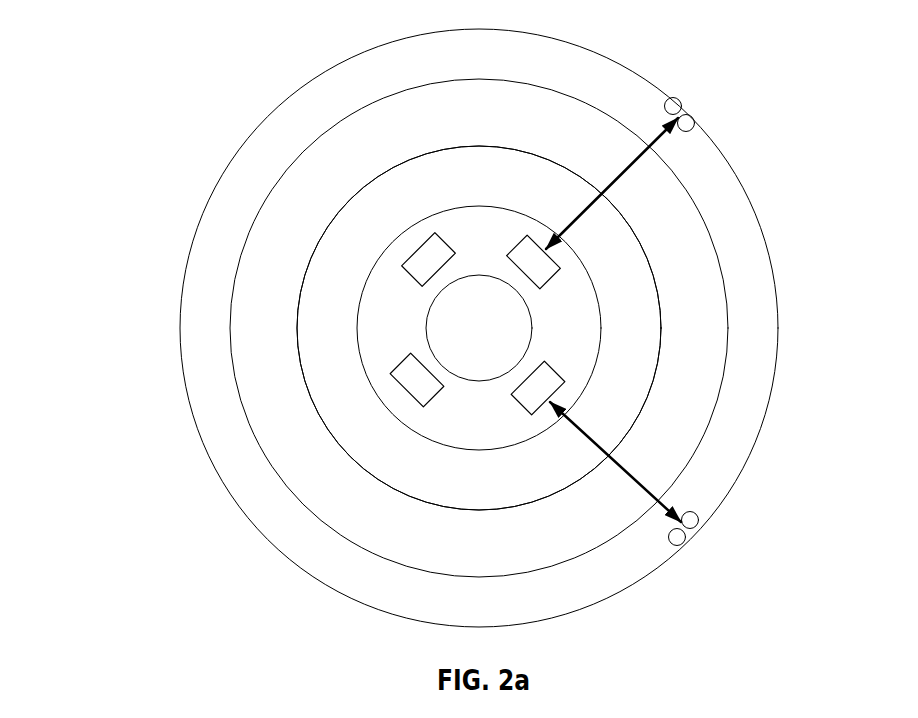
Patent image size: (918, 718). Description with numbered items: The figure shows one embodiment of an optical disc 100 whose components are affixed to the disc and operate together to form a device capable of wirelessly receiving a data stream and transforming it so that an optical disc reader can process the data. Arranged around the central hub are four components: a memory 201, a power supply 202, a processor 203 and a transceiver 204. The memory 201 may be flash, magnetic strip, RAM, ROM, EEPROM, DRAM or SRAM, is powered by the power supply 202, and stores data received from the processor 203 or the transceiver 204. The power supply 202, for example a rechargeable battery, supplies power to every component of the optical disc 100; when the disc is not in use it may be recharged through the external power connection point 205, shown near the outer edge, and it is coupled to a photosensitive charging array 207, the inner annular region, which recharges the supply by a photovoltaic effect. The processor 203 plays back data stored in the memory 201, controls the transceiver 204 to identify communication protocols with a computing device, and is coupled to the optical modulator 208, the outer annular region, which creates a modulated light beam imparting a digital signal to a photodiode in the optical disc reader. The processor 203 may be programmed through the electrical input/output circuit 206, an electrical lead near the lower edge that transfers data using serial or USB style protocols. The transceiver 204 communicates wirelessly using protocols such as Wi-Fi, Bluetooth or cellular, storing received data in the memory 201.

The optical disc 100 is at (233, 87).
The memory 201 is at (294, 233).
The power supply 202 is at (662, 213).
The processor 203 is at (670, 338).
The transceiver 204 is at (287, 352).
The external power connection point 205 is at (671, 153).
The electrical input/output circuit 206 is at (681, 474).
The photosensitive charging array 207 is at (368, 328).
The optical modulator 208 is at (398, 328).